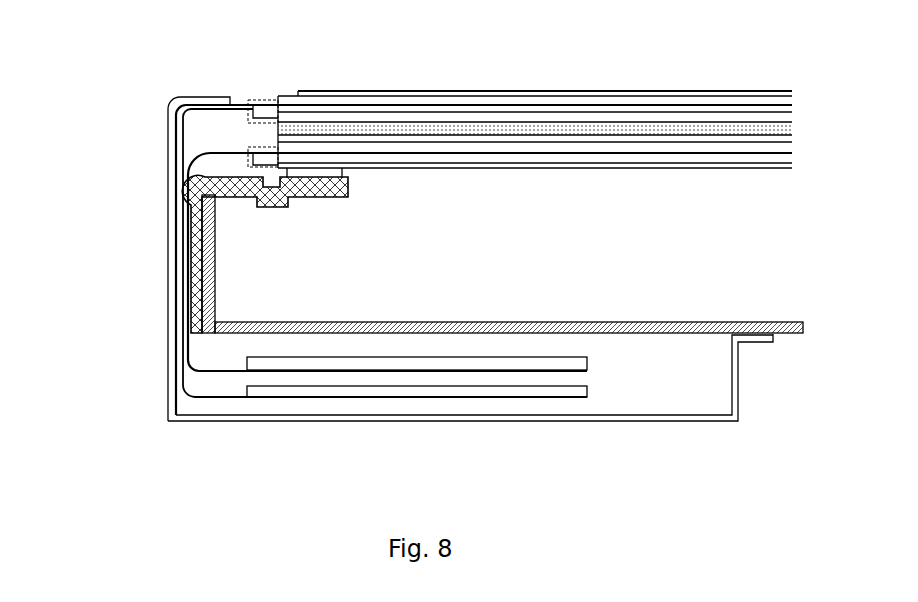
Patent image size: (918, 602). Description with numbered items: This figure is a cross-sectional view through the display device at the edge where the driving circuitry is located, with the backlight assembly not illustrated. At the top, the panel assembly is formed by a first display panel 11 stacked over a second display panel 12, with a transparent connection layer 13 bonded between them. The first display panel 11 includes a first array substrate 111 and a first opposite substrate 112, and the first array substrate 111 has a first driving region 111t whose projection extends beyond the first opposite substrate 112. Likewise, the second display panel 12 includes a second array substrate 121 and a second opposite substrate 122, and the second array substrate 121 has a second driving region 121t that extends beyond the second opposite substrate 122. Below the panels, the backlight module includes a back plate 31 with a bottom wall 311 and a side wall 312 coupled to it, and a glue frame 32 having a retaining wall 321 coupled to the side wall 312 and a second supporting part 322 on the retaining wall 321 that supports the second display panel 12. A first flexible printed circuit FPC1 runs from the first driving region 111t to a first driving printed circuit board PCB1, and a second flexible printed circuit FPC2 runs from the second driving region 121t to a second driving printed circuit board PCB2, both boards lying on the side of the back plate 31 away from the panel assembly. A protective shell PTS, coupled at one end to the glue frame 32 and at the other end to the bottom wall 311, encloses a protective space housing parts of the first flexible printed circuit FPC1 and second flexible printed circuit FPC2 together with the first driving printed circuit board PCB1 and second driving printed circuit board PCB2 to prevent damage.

The first display panel 11 is at (554, 90).
The first array substrate 111 is at (463, 110).
The first driving region 111t is at (259, 103).
The first opposite substrate 112 is at (373, 101).
The second display panel 12 is at (554, 175).
The second array substrate 121 is at (650, 168).
The second driving region 121t is at (250, 148).
The second opposite substrate 122 is at (543, 147).
The connection layer 13 is at (777, 132).
The back plate 31 is at (502, 264).
The bottom wall 311 is at (270, 263).
The side wall 312 is at (215, 291).
The glue frame 32 is at (194, 226).
The retaining wall 321 is at (198, 220).
The second supporting part 322 is at (250, 181).
The protective shell PTS is at (168, 337).
The first flexible printed circuit FPC1 is at (195, 397).
The second flexible printed circuit FPC2 is at (215, 371).
The first driving printed circuit board PCB1 is at (587, 388).
The second driving printed circuit board PCB2 is at (587, 358).